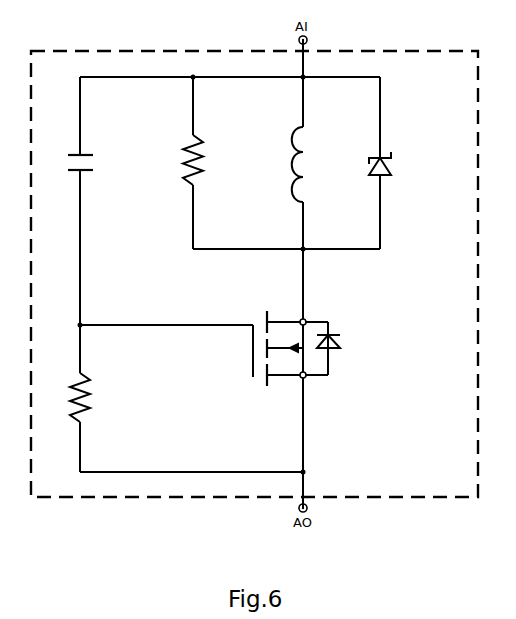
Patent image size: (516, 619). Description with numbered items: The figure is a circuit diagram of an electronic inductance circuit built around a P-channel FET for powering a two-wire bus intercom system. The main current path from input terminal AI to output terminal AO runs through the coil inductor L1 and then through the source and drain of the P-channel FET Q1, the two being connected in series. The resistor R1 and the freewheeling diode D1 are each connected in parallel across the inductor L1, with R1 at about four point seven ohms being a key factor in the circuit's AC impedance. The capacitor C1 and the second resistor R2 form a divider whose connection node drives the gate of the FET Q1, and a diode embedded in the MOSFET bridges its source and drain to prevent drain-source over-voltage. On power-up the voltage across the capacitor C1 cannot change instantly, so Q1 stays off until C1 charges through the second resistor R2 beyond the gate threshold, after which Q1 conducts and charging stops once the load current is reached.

The capacitor C1 is at (121, 177).
The resistor R1 is at (214, 161).
The coil inductor L1 is at (327, 164).
The freewheeling diode D1 is at (411, 174).
The P-channel FET Q1 is at (309, 352).
The second resistor R2 is at (102, 397).